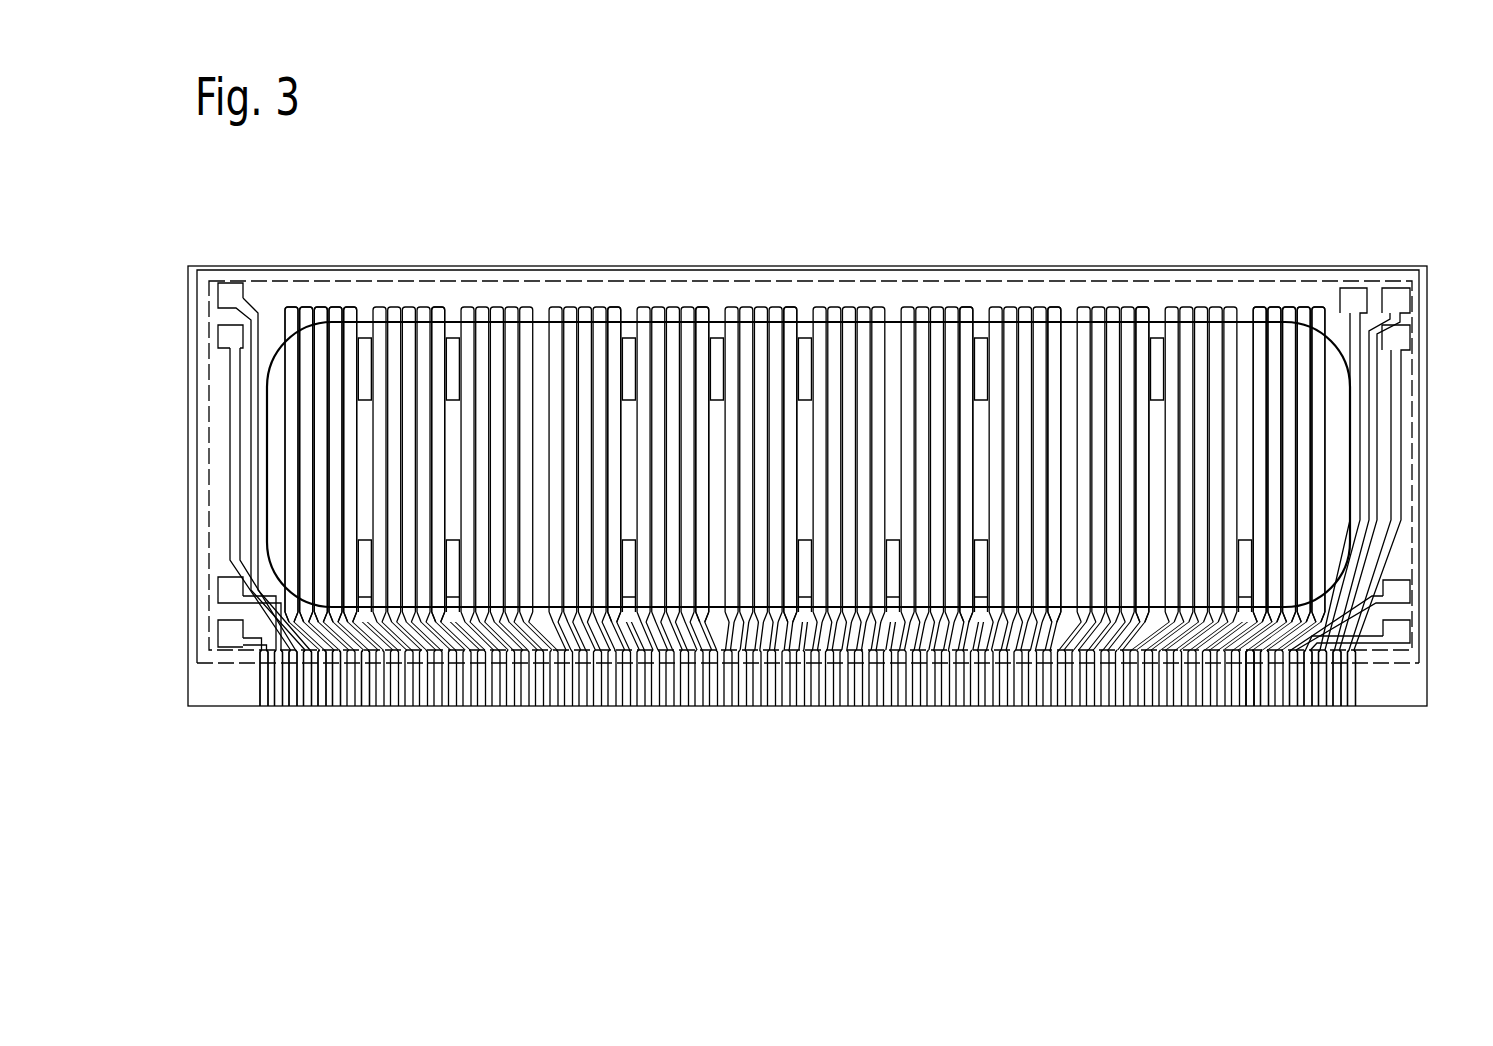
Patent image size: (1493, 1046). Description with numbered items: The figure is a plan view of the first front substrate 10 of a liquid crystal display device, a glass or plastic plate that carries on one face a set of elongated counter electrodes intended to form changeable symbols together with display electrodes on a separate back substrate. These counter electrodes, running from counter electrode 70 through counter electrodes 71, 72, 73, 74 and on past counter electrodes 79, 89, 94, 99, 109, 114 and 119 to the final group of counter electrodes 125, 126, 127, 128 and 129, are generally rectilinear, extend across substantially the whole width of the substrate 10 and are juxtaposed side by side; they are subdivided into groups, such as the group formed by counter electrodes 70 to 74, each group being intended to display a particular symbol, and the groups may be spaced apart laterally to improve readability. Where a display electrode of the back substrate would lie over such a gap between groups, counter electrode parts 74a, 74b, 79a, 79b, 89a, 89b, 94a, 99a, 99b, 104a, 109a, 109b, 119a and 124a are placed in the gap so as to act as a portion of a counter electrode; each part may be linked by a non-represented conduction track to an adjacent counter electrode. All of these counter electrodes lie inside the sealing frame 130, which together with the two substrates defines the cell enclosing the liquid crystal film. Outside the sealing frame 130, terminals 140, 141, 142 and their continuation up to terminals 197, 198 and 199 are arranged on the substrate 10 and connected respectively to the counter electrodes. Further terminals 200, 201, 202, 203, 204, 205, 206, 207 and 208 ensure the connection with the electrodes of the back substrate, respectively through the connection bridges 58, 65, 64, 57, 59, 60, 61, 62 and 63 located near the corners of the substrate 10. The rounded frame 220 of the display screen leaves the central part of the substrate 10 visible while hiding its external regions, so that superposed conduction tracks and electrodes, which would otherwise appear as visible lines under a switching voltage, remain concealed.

The first front substrate 10 is at (1423, 153).
The connection bridge 57 is at (232, 293).
The connection bridge 58 is at (232, 640).
The connection bridge 59 is at (1355, 290).
The connection bridge 60 is at (1398, 290).
The connection bridge 61 is at (1405, 328).
The connection bridge 62 is at (1400, 590).
The connection bridge 63 is at (1400, 633).
The connection bridge 64 is at (222, 337).
The connection bridge 65 is at (225, 592).
The counter electrode 70 is at (291, 307).
The counter electrode 71 is at (306, 307).
The counter electrode 72 is at (324, 307).
The counter electrode 73 is at (336, 307).
The counter electrode 74 is at (350, 307).
The counter electrode part 74a is at (365, 338).
The counter electrode part 74b is at (360, 556).
The counter electrode 79 is at (440, 307).
The counter electrode part 79a is at (453, 338).
The counter electrode part 79b is at (458, 575).
The counter electrode 89 is at (615, 307).
The counter electrode part 89a is at (629, 338).
The counter electrode part 89b is at (630, 575).
The counter electrode 94 is at (705, 307).
The counter electrode part 94a is at (717, 338).
The counter electrode 99 is at (793, 307).
The counter electrode part 99a is at (805, 338).
The counter electrode part 99b is at (803, 577).
The counter electrode part 104a is at (893, 552).
The counter electrode 109 is at (965, 307).
The counter electrode part 109a is at (981, 338).
The counter electrode part 109b is at (987, 577).
The counter electrode 114 is at (1055, 307).
The counter electrode 119 is at (1142, 307).
The counter electrode part 119a is at (1157, 338).
The counter electrode part 124a is at (1243, 590).
The counter electrode 125 is at (1259, 307).
The counter electrode 126 is at (1274, 307).
The counter electrode 127 is at (1289, 307).
The counter electrode 128 is at (1303, 307).
The counter electrode 129 is at (1318, 307).
The sealing frame 130 is at (1424, 485).
The frame 220 is at (1343, 355).
The terminal 140 is at (328, 706).
The terminal 141 is at (343, 706).
The terminal 142 is at (360, 706).
The terminal 197 is at (1250, 708).
The terminal 198 is at (1252, 708).
The terminal 199 is at (1258, 708).
The terminal 200 is at (263, 706).
The terminal 201 is at (278, 706).
The terminal 202 is at (295, 706).
The terminal 203 is at (312, 706).
The terminal 204 is at (1288, 708).
The terminal 205 is at (1305, 708).
The terminal 206 is at (1342, 708).
The terminal 207 is at (1322, 692).
The terminal 208 is at (1335, 683).